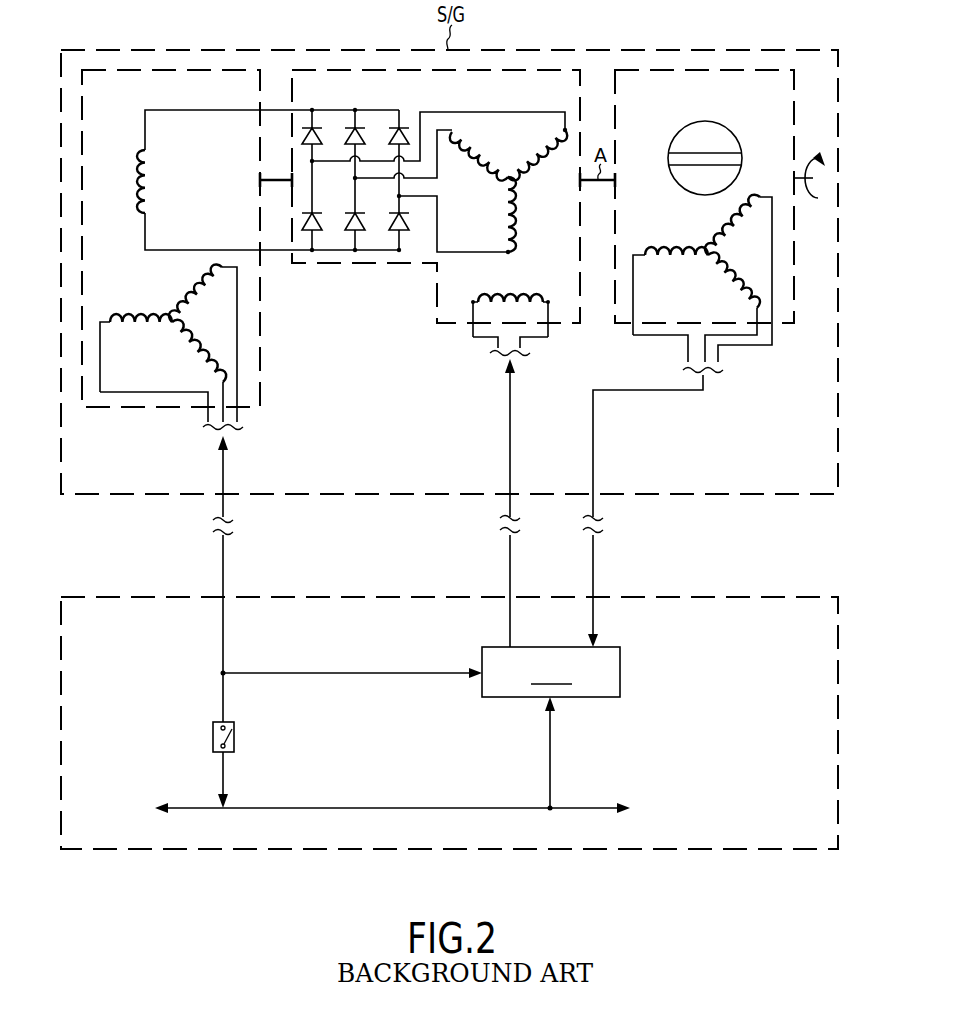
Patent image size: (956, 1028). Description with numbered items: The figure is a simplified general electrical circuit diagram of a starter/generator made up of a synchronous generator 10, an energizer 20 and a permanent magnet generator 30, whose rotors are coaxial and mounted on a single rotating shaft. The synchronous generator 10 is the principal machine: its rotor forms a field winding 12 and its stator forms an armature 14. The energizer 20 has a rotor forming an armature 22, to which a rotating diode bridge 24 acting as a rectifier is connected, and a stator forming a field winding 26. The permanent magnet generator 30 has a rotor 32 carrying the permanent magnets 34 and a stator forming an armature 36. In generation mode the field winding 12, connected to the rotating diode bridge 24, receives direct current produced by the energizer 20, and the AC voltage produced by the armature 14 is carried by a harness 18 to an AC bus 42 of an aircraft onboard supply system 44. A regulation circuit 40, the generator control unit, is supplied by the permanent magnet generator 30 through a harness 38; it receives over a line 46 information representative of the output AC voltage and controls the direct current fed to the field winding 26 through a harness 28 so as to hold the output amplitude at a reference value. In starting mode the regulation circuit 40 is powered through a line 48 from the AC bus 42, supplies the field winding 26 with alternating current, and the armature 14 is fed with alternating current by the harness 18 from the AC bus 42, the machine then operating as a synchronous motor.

The synchronous generator 10 is at (252, 93).
The field winding 12 is at (154, 184).
The armature 14 is at (160, 305).
The harness 18 is at (222, 470).
The energizer 20 is at (574, 93).
The armature 22 is at (539, 180).
The rotating diode bridge 24 is at (375, 207).
The field winding 26 is at (509, 297).
The harness 28 is at (508, 467).
The permanent magnet generator 30 is at (785, 93).
The rotor 32 is at (695, 152).
The permanent magnets 34 is at (685, 174).
The armature 36 is at (709, 235).
The harness 38 is at (591, 467).
The regulation circuit 40 is at (620, 672).
The AC bus 42 is at (375, 808).
The onboard supply system 44 is at (413, 597).
The line 46 is at (354, 673).
The line 48 is at (551, 761).